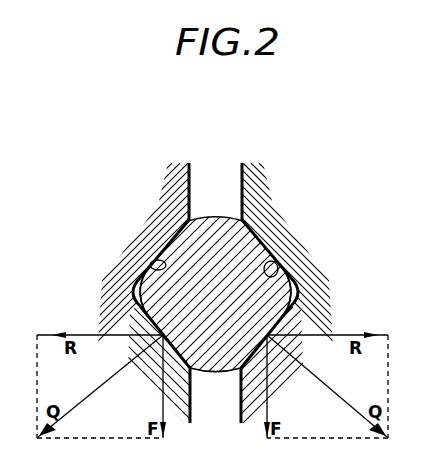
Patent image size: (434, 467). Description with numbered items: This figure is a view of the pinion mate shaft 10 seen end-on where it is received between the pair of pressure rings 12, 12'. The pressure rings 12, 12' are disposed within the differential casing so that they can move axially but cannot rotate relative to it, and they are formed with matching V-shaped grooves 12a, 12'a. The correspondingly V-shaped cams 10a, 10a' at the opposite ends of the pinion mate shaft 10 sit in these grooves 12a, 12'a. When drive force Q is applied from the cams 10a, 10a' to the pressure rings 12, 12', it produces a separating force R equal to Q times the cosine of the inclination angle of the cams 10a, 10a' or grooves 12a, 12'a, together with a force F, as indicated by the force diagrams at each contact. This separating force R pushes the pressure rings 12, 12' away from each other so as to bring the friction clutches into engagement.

The pinion mate shaft 10 is at (219, 200).
The pressure ring 12 is at (142, 296).
The pressure ring 12' is at (290, 296).
The V-shaped groove 12a is at (152, 263).
The V-shaped groove 12'a is at (310, 252).
The V-shaped cam 10a is at (93, 294).
The V-shaped cam 10a' is at (341, 294).